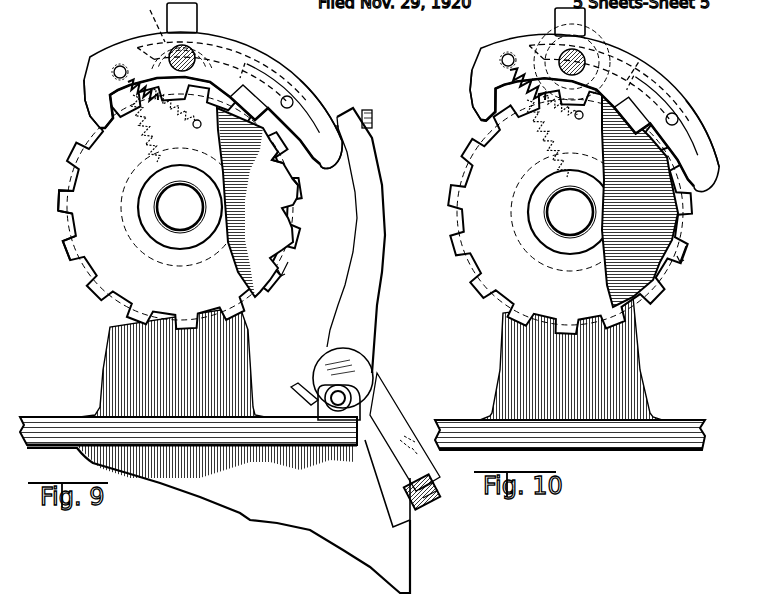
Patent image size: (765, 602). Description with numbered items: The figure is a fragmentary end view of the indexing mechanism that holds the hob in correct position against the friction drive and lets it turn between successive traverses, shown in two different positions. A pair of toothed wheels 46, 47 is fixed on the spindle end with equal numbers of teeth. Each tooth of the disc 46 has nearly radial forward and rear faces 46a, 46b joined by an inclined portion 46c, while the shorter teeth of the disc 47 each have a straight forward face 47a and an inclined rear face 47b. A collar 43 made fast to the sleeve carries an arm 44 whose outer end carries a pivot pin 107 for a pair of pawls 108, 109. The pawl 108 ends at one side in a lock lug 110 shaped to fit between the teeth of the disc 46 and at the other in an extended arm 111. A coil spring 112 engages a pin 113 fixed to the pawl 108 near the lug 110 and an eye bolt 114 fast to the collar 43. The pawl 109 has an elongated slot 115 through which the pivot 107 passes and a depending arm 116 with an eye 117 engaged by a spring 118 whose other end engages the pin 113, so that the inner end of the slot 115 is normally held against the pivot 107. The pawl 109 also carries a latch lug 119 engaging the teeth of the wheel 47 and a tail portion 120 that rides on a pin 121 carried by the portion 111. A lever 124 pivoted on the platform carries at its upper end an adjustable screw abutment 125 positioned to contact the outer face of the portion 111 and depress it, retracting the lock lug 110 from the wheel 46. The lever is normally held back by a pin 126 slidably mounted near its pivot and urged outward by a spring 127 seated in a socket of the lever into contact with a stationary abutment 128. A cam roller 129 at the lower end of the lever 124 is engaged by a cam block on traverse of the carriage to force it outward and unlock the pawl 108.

In FIG. 10, the collar 43 is at (650, 215).
In FIG. 9, the arm 44 is at (185, 18).
In FIG. 10, the arm 44 is at (557, 30).
In FIG. 9, the toothed wheel 46 is at (180, 207).
In FIG. 9, the forward face 46a is at (60, 205).
In FIG. 9, the rear face 46b is at (66, 243).
In FIG. 9, the inclined portion 46c is at (73, 212).
In FIG. 9, the toothed wheel 47 is at (294, 245).
In FIG. 10, the toothed wheel 47 is at (644, 199).
In FIG. 9, the straight forward face 47a is at (283, 160).
In FIG. 9, the inclined rear face 47b is at (299, 183).
In FIG. 9, the pivot pin 107 is at (182, 58).
In FIG. 10, the pivot pin 107 is at (590, 56).
In FIG. 9, the pawl 108 is at (238, 43).
In FIG. 10, the pawl 108 is at (482, 65).
In FIG. 9, the pawl 109 is at (290, 50).
In FIG. 10, the pawl 109 is at (697, 117).
In FIG. 9, the lock lug 110 is at (87, 115).
In FIG. 10, the lock lug 110 is at (473, 98).
In FIG. 9, the extended arm 111 is at (313, 112).
In FIG. 10, the extended arm 111 is at (707, 147).
In FIG. 9, the coil spring 112 is at (140, 138).
In FIG. 10, the coil spring 112 is at (535, 157).
In FIG. 9, the pin 113 is at (114, 70).
In FIG. 10, the pin 113 is at (508, 54).
In FIG. 9, the eye bolt 114 is at (150, 163).
In FIG. 10, the eye bolt 114 is at (555, 160).
In FIG. 9, the elongated slot 115 is at (151, 21).
In FIG. 10, the elongated slot 115 is at (640, 60).
In FIG. 9, the depending arm 116 is at (263, 43).
In FIG. 10, the depending arm 116 is at (630, 93).
In FIG. 9, the eye 117 is at (195, 128).
In FIG. 10, the eye 117 is at (567, 112).
In FIG. 9, the spring 118 is at (146, 80).
In FIG. 10, the spring 118 is at (538, 73).
In FIG. 9, the latch lug 119 is at (295, 80).
In FIG. 10, the latch lug 119 is at (660, 113).
In FIG. 9, the tail portion 120 is at (312, 90).
In FIG. 9, the pin 121 is at (266, 112).
In FIG. 10, the pin 121 is at (673, 126).
In FIG. 9, the lever 124 is at (375, 373).
In FIG. 9, the adjustable screw abutment 125 is at (373, 112).
In FIG. 9, the pin 126 is at (313, 380).
In FIG. 9, the spring 127 is at (343, 357).
In FIG. 9, the stationary abutment 128 is at (293, 390).
In FIG. 9, the cam roller 129 is at (433, 483).